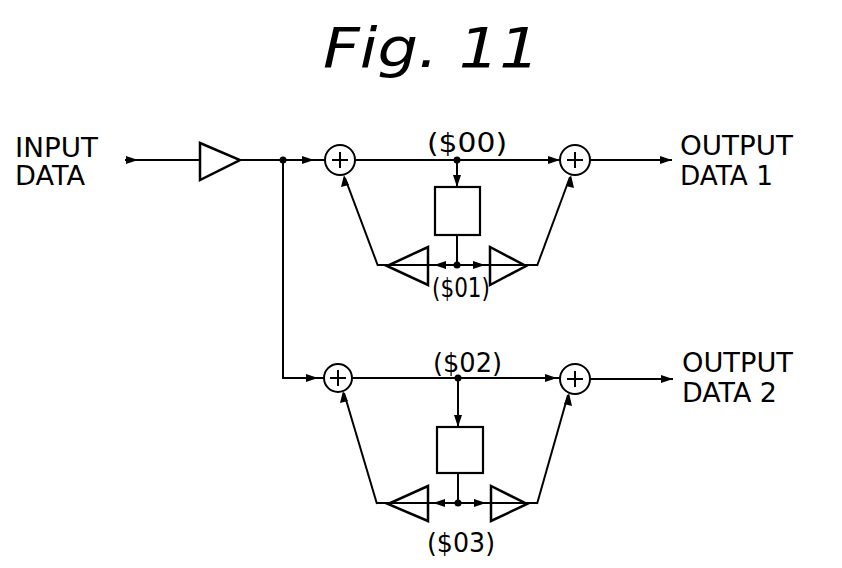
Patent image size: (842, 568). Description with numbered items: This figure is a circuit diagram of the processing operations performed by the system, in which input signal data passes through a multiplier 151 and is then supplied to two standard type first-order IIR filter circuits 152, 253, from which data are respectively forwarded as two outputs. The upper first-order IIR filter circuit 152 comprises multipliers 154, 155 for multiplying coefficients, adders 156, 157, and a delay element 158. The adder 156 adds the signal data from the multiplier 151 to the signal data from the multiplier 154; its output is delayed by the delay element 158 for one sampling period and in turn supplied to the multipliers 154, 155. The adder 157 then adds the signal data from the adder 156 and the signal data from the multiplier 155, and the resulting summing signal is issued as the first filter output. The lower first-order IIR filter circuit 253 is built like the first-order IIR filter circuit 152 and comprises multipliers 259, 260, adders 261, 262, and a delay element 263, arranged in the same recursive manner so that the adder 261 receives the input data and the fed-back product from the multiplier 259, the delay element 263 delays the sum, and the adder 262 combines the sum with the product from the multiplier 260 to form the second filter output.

The multiplier 151 is at (230, 152).
The first-order IIR filter circuit 152 is at (352, 250).
The multiplier 154 is at (411, 252).
The multiplier 155 is at (512, 277).
The adder 156 is at (352, 148).
The adder circuit 157 is at (586, 148).
The delay element 158 is at (482, 199).
The first-order IIR filter circuit 253 is at (346, 459).
The multiplier 259 is at (411, 491).
The multiplier 260 is at (518, 514).
The adder 261 is at (350, 367).
The adder 262 is at (586, 368).
The delay element 263 is at (484, 455).